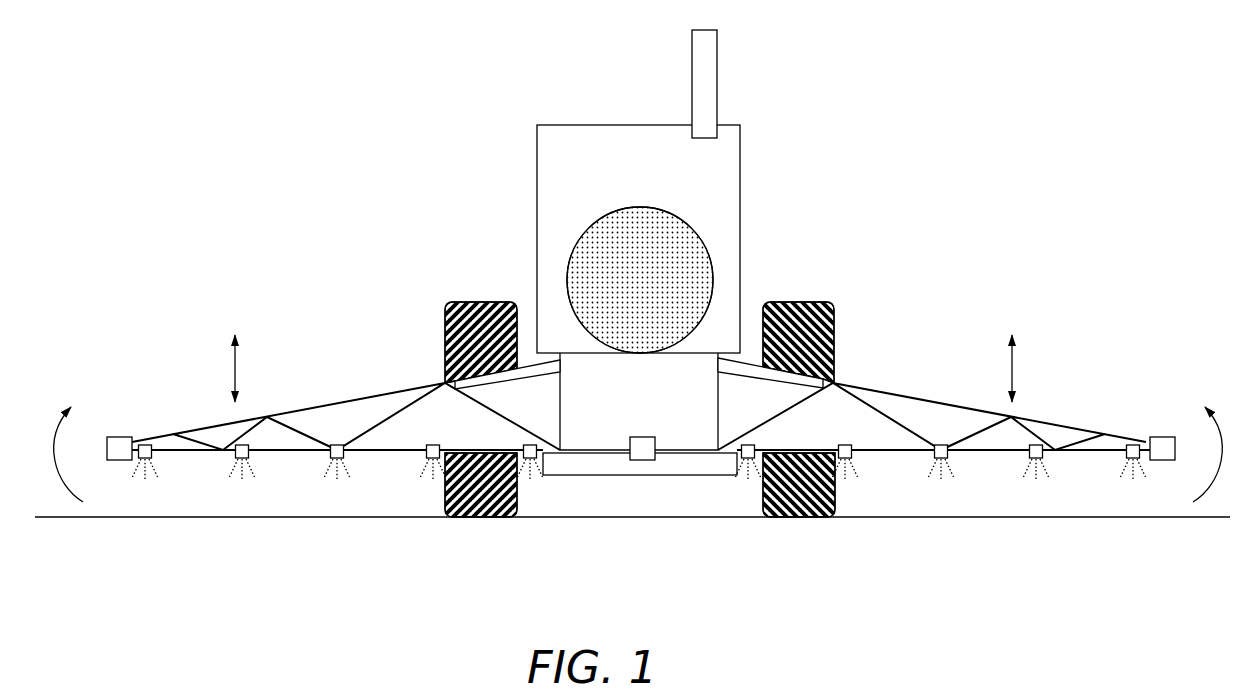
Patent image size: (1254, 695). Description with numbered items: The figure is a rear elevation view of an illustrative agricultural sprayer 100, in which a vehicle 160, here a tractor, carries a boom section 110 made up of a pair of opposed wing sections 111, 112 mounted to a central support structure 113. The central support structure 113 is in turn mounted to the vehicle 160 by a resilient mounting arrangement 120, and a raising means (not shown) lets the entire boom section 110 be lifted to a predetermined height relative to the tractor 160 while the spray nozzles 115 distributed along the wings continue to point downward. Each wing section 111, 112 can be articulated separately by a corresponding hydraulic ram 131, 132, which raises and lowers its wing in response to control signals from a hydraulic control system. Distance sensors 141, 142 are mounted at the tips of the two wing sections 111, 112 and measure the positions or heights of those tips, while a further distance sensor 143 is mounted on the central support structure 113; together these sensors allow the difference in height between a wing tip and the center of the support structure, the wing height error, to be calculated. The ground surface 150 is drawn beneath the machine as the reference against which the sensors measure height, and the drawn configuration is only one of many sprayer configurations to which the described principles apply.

The agricultural sprayer 100 is at (343, 108).
The boom section 110 is at (321, 386).
The wing section 111 is at (200, 456).
The wing section 112 is at (1080, 458).
The central support structure 113 is at (587, 456).
The spray nozzles 115 is at (143, 488).
The resilient mounting arrangement 120 is at (552, 477).
The hydraulic ram 131 is at (498, 372).
The hydraulic ram 132 is at (787, 372).
The distance sensor 141 is at (120, 437).
The distance sensor 142 is at (1165, 437).
The distance sensor 143 is at (640, 461).
The ground surface 150 is at (910, 518).
The vehicle 160 is at (527, 193).